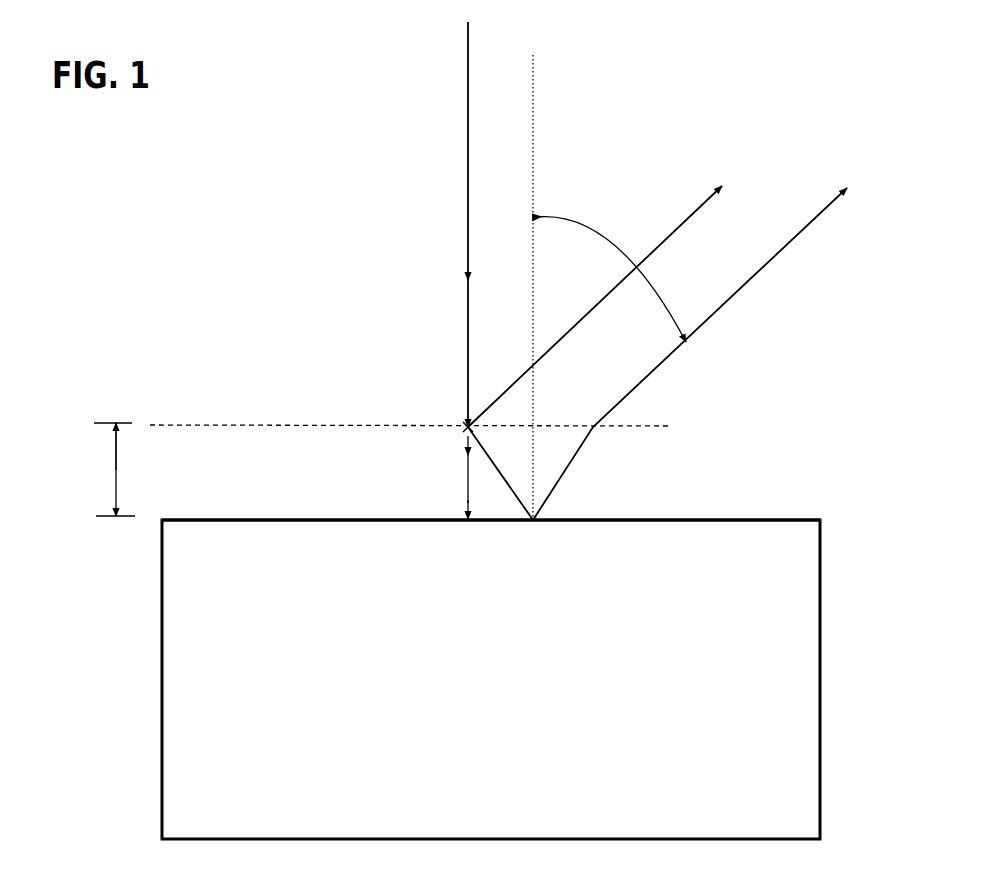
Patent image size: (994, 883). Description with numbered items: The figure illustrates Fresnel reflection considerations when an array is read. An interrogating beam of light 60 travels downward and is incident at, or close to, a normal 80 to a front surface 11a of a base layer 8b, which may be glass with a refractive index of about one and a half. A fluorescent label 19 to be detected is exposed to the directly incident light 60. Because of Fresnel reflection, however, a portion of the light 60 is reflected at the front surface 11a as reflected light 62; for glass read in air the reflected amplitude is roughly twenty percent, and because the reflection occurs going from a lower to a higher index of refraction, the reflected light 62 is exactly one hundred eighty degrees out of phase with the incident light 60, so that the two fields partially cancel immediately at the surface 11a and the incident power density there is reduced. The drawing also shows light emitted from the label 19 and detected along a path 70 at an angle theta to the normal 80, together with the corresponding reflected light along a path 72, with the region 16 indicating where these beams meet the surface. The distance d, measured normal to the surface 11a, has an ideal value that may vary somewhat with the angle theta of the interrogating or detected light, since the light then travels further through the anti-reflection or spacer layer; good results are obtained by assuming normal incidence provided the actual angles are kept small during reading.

The base layer 8b is at (478, 666).
The front surface 11a is at (763, 518).
The normal 80 is at (540, 92).
The interrogating beam of light 60 is at (463, 236).
The reflected light 62 is at (463, 461).
The fluorescent label 19 is at (462, 426).
The path 70 is at (688, 214).
The path 72 is at (751, 275).
The converging beam region 16 is at (620, 465).
The angle theta is at (628, 232).
The distance d is at (113, 460).